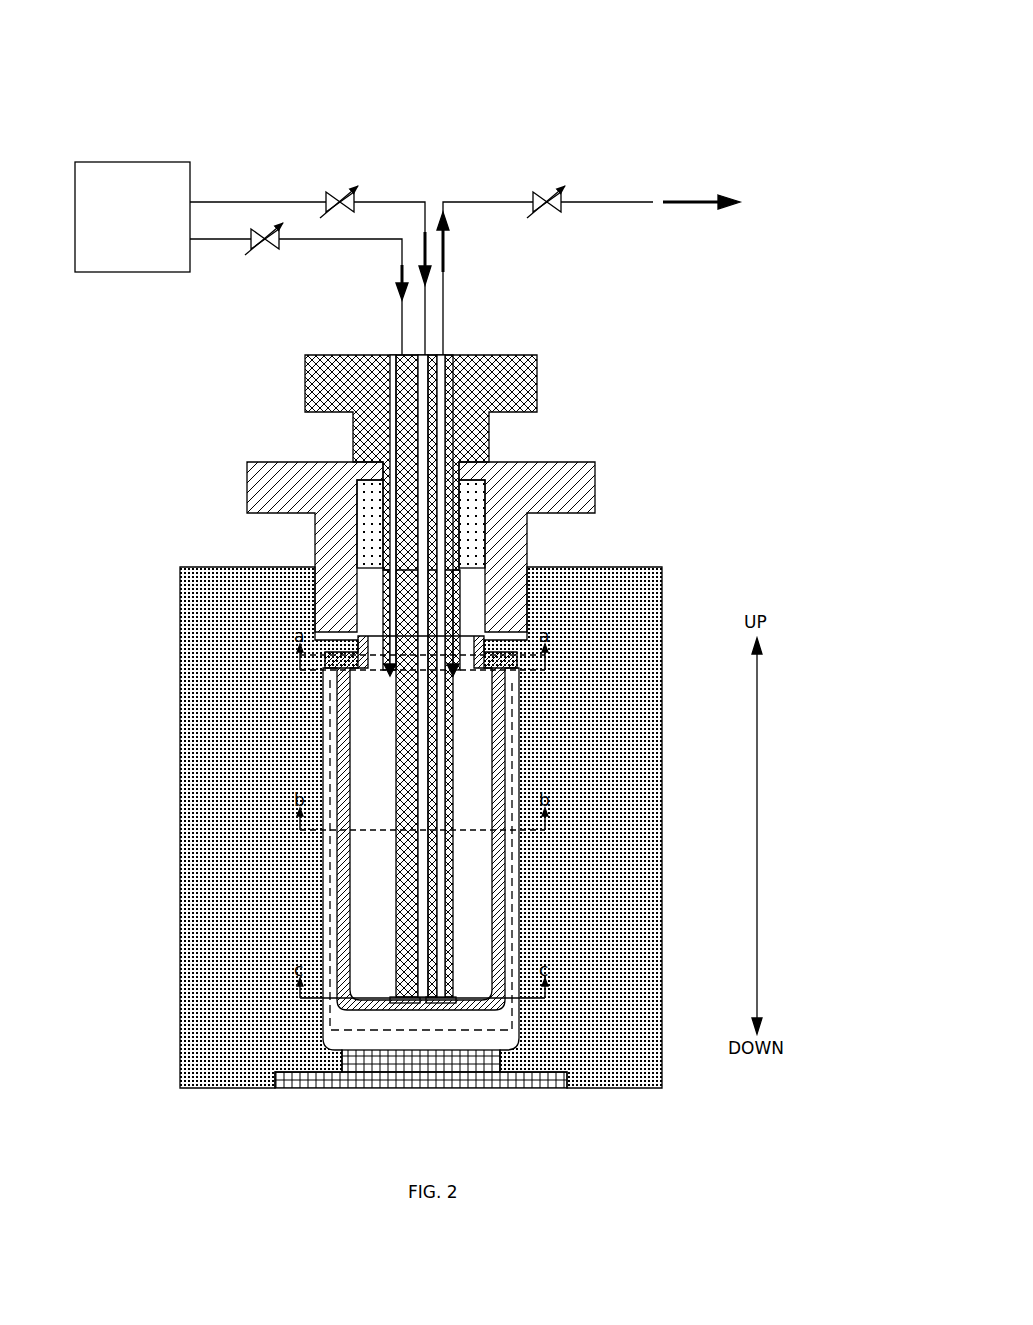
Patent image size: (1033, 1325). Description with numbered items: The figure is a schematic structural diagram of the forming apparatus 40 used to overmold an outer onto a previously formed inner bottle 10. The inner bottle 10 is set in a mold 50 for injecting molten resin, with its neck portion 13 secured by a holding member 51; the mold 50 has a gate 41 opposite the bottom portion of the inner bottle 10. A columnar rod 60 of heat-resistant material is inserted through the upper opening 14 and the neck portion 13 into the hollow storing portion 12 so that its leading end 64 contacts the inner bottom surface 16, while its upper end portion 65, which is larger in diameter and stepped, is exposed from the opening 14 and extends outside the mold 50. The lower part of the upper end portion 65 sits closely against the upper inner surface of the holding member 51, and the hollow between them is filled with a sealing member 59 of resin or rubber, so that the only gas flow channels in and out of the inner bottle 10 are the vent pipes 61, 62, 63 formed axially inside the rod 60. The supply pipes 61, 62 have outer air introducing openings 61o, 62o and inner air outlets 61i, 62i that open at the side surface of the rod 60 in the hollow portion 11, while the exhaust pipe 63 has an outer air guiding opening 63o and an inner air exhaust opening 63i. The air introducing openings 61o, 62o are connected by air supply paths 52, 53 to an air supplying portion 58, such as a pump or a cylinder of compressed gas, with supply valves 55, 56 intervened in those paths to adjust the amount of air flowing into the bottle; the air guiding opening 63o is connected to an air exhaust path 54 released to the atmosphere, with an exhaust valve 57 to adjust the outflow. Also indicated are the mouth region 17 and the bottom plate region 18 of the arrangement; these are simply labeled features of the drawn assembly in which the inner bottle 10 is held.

The inner bottle 10 is at (372, 1040).
The hollow portion 11 is at (362, 873).
The hollow storing portion 12 is at (505, 812).
The neck portion 13 is at (565, 597).
The upper opening 14 is at (545, 543).
The inner bottom surface 16 is at (345, 1002).
The mouth portion 17 is at (258, 578).
The bottom plate 18 is at (300, 1022).
The apparatus 40 is at (618, 102).
The gate 41 is at (400, 1030).
The mold 50 is at (208, 567).
The holding member 51 is at (255, 485).
The air supply path 52 is at (215, 242).
The air supply path 53 is at (258, 202).
The air exhaust path 54 is at (490, 202).
The supply valve 55 is at (278, 246).
The supply valve 56 is at (325, 197).
The exhaust valve 57 is at (560, 208).
The air supplying portion 58 is at (120, 273).
The sealing member 59 is at (370, 492).
The columnar rod 60 is at (525, 372).
The supply pipe 61 is at (392, 353).
The air introducing opening 61o is at (401, 352).
The air outlet 61i is at (392, 672).
The supply pipe 62 is at (430, 375).
The air introducing opening 62o is at (427, 352).
The air outlet 62i is at (402, 1006).
The exhaust pipe 63 is at (440, 422).
The air guiding opening 63o is at (448, 352).
The air exhaust opening 63i is at (432, 1008).
The leading end 64 is at (424, 1010).
The upper end portion 65 is at (532, 350).